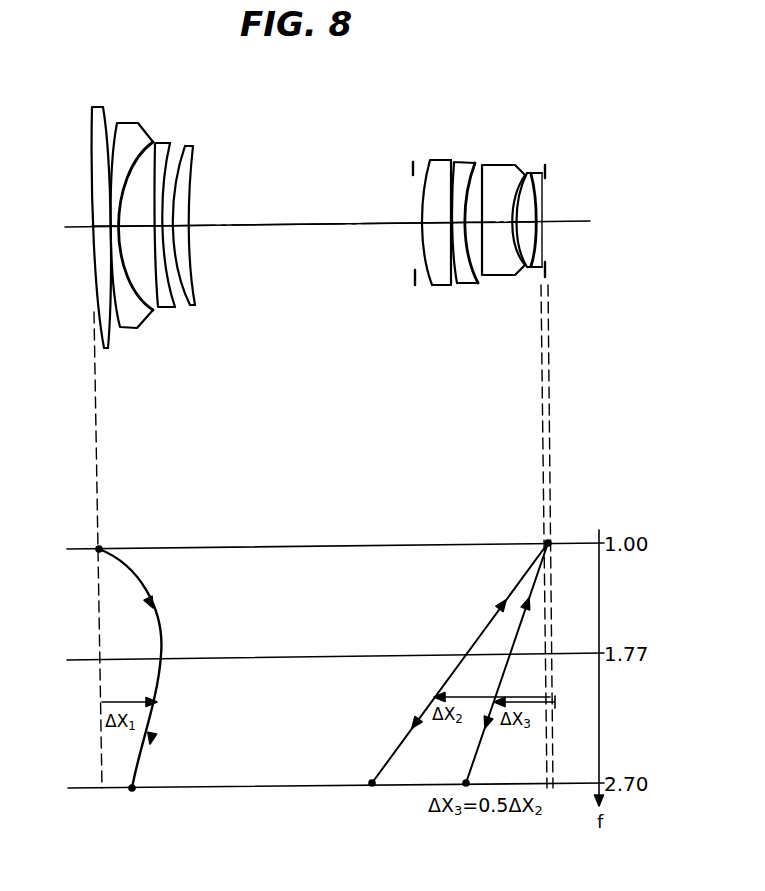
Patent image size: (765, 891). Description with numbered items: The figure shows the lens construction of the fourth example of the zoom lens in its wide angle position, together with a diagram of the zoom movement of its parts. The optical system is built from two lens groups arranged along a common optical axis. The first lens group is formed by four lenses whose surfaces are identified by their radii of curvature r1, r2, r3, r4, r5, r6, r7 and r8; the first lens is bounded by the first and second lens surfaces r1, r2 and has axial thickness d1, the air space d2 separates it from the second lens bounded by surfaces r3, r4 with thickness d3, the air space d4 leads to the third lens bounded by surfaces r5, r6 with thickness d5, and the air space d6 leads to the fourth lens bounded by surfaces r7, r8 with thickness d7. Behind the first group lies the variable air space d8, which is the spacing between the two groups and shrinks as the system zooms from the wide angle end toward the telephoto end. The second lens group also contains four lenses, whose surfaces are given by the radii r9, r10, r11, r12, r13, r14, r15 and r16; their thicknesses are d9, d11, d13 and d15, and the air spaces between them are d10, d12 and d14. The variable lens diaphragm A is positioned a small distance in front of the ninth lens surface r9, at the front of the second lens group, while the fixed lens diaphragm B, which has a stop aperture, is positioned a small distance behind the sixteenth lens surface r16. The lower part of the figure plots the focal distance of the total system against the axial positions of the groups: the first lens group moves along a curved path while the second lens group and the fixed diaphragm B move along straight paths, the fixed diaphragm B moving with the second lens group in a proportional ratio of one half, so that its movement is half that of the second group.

The first lens surface r1 is at (95, 107).
The second lens surface r2 is at (105, 108).
The third lens surface r3 is at (114, 126).
The fourth lens surface r4 is at (153, 142).
The fifth lens surface r5 is at (157, 143).
The sixth lens surface r6 is at (171, 146).
The seventh lens surface r7 is at (187, 148).
The eighth lens surface r8 is at (194, 150).
The ninth lens surface r9 is at (424, 160).
The tenth lens surface r10 is at (450, 160).
The eleventh lens surface r11 is at (454, 162).
The twelfth lens surface r12 is at (475, 163).
The thirteenth lens surface r13 is at (483, 165).
The fourteenth lens surface r14 is at (524, 173).
The fifteenth lens surface r15 is at (537, 173).
The sixteenth lens surface r16 is at (541, 173).
The first lens thickness d1 is at (100, 232).
The second air space d2 is at (108, 234).
The second lens thickness d3 is at (115, 236).
The fourth air space d4 is at (141, 227).
The third lens thickness d5 is at (159, 232).
The sixth air space d6 is at (168, 233).
The fourth lens thickness d7 is at (181, 231).
The variable air space between lens groups d8 is at (312, 229).
The fifth lens thickness d9 is at (436, 228).
The tenth air space d10 is at (451, 279).
The sixth lens thickness d11 is at (465, 283).
The twelfth air space d12 is at (469, 283).
The seventh lens thickness d13 is at (492, 276).
The fourteenth air space d14 is at (515, 280).
The eighth lens thickness d15 is at (540, 228).
The variable lens diaphragm A is at (413, 163).
The fixed lens diaphragm B is at (545, 167).